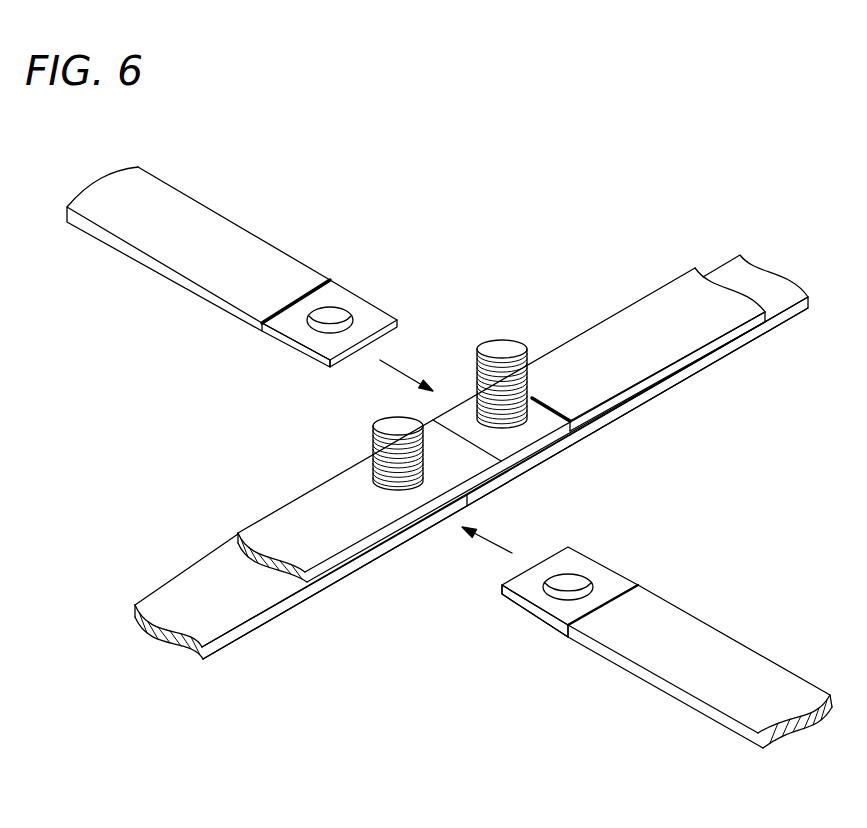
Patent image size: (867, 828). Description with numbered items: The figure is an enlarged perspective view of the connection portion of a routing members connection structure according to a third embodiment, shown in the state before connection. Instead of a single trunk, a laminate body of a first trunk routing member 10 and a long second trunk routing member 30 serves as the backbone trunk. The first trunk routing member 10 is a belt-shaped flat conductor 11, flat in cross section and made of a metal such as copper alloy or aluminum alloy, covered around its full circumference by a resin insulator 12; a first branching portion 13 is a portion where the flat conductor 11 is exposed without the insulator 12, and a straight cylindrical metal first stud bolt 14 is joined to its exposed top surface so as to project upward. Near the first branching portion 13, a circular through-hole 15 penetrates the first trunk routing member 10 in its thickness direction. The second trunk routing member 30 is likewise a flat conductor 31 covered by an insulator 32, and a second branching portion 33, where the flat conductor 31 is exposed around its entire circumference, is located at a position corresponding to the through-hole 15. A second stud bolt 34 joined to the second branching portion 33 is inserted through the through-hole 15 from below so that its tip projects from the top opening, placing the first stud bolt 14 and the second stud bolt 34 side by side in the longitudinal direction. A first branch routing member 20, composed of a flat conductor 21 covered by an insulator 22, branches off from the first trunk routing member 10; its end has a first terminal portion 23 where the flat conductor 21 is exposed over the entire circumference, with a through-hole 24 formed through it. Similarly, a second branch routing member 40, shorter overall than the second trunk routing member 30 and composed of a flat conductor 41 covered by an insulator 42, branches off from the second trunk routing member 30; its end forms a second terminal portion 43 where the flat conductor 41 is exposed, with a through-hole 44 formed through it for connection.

The first trunk routing member 10 is at (501, 397).
The flat conductor 11 is at (566, 428).
The insulator 12 is at (607, 347).
The first branching portion 13 is at (473, 403).
The first stud bolt 14 is at (501, 350).
The through-hole 15 is at (368, 482).
The first branch routing member 20 is at (232, 288).
The flat conductor 21 is at (345, 294).
The insulator 22 is at (200, 203).
The first terminal portion 23 is at (310, 350).
The through-hole 24 is at (310, 323).
The second trunk routing member 30 is at (471, 457).
The flat conductor 31 is at (463, 509).
The insulator 32 is at (693, 380).
The second branching portion 33 is at (418, 535).
The second stud bolt 34 is at (393, 422).
The second branch routing member 40 is at (635, 621).
The flat conductor 41 is at (572, 546).
The insulator 42 is at (778, 662).
The second terminal portion 43 is at (500, 590).
The through-hole 44 is at (550, 597).